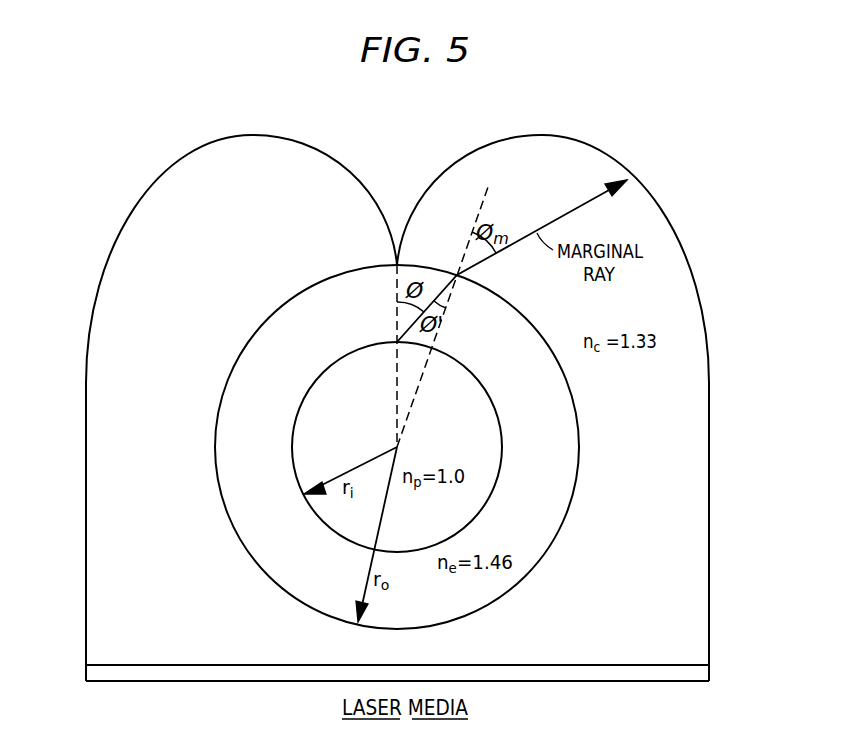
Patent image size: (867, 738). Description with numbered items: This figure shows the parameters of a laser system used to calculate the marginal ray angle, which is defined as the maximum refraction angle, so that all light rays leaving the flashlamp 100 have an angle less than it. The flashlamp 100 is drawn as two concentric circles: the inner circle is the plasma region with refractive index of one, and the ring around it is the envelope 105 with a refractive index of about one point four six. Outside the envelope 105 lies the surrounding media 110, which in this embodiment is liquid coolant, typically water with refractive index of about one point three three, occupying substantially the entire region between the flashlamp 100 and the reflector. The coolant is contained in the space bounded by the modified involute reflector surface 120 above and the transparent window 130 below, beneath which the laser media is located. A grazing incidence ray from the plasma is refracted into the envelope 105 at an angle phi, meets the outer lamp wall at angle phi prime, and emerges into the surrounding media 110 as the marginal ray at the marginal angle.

The flashlamp 100 is at (356, 447).
The envelope 105 is at (225, 495).
The surrounding media 110 is at (690, 411).
The modified involute reflector surface 120 is at (162, 172).
The transparent window 130 is at (189, 677).